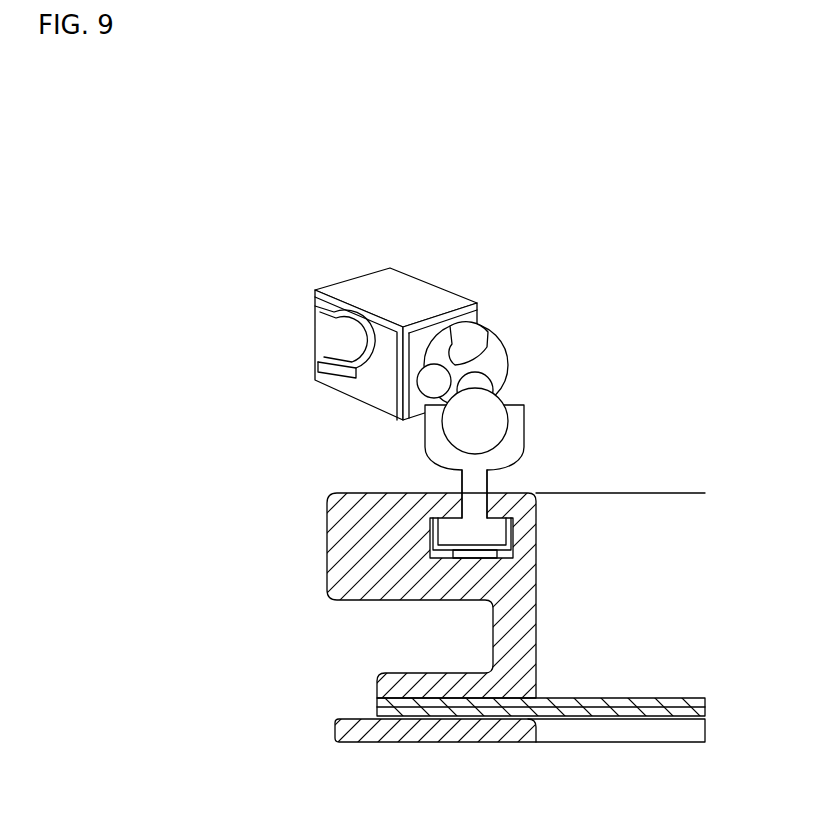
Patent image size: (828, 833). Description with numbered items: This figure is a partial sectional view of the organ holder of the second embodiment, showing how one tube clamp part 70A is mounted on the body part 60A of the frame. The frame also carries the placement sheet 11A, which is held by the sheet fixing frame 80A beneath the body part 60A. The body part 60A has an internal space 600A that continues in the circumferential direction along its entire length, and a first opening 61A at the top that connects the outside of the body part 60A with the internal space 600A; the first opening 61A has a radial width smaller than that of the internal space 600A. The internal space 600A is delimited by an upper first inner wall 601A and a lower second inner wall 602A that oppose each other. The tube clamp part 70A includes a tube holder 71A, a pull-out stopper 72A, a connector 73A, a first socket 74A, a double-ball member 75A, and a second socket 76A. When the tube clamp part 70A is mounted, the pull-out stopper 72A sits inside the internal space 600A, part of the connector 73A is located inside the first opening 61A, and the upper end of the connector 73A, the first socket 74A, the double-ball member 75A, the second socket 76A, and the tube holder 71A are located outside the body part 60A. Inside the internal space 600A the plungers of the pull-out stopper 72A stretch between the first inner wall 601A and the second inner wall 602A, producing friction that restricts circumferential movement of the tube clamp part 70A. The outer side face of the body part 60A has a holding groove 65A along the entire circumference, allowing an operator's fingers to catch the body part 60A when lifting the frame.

The placement sheet 11A is at (377, 705).
The body part 60A is at (350, 572).
The internal space 600A is at (483, 521).
The first inner wall 601A is at (513, 525).
The second inner wall 602A is at (499, 554).
The first opening 61A is at (502, 450).
The holding groove 65A is at (384, 637).
The tube clamp part 70A is at (445, 343).
The tube holder 71A is at (375, 292).
The pull-out stopper 72A is at (450, 530).
The connector 73A is at (441, 505).
The first socket 74A is at (515, 407).
The double-ball member 75A is at (491, 362).
The second socket 76A is at (457, 335).
The sheet fixing frame 80A is at (337, 730).